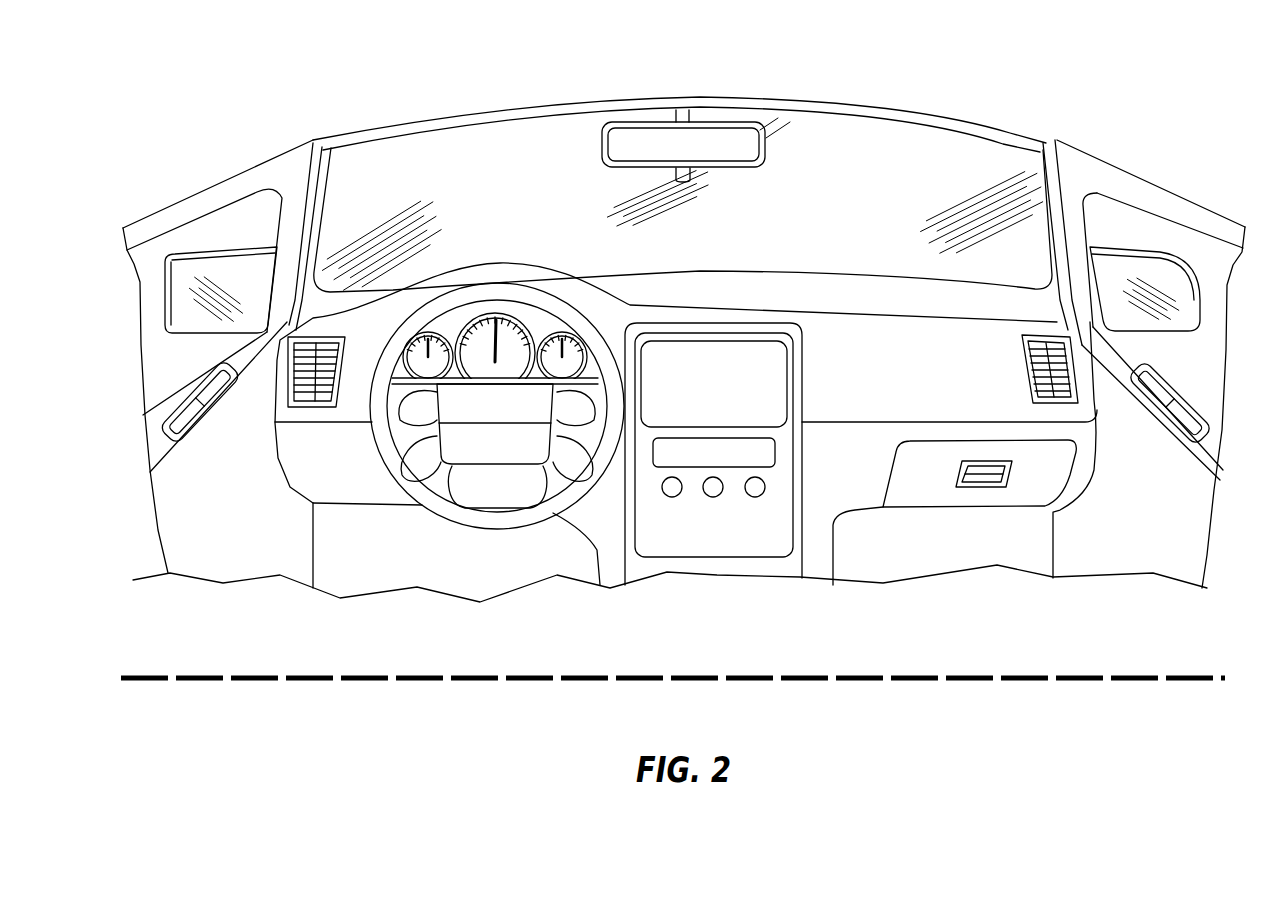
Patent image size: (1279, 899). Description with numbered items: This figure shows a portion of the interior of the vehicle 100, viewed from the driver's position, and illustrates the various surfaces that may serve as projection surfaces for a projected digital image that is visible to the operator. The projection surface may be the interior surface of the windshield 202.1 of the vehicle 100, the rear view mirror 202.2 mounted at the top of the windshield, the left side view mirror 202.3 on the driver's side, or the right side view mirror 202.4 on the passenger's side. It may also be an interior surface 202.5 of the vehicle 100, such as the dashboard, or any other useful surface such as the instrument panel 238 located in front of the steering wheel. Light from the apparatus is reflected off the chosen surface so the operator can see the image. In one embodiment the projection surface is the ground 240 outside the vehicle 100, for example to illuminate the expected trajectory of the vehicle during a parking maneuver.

The vehicle 100 is at (975, 112).
The windshield 202.1 is at (925, 180).
The rear view mirror 202.2 is at (717, 143).
The left side view mirror 202.3 is at (240, 277).
The right side view mirror 202.4 is at (1137, 277).
The interior surface 202.5 is at (955, 367).
The instrument panel 238 is at (487, 320).
The ground 240 is at (1007, 676).